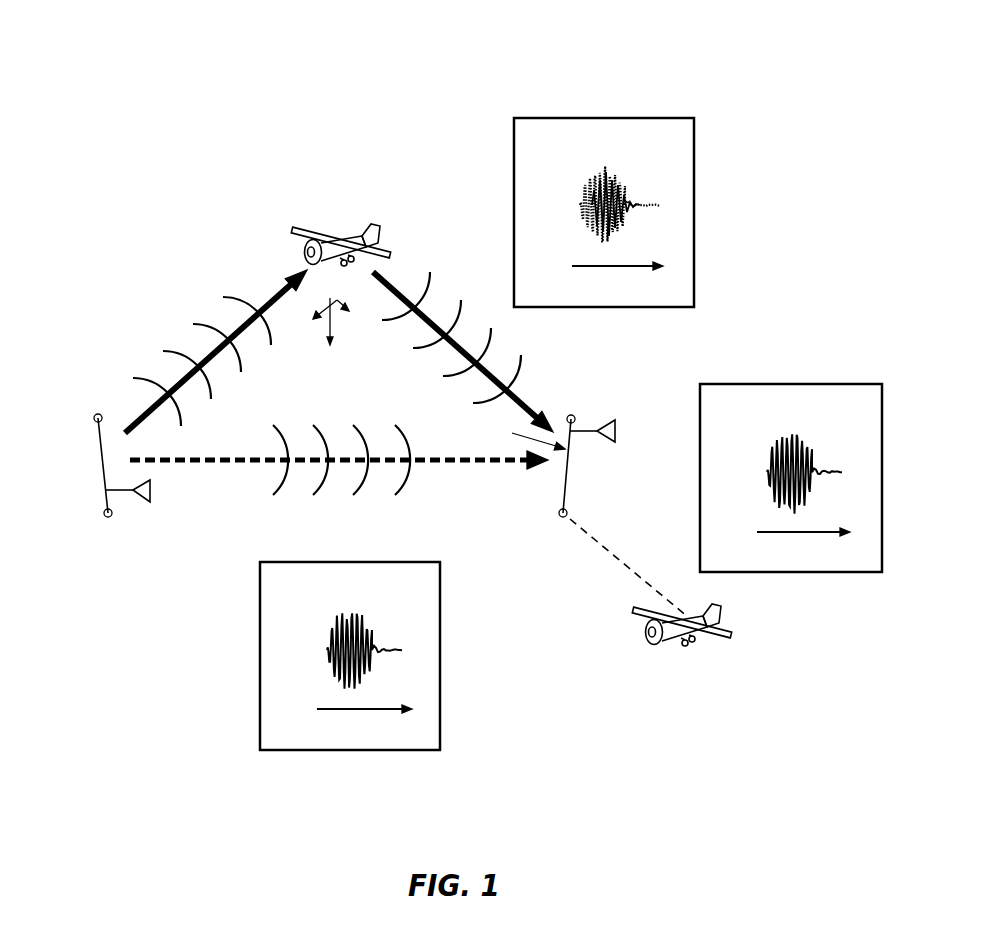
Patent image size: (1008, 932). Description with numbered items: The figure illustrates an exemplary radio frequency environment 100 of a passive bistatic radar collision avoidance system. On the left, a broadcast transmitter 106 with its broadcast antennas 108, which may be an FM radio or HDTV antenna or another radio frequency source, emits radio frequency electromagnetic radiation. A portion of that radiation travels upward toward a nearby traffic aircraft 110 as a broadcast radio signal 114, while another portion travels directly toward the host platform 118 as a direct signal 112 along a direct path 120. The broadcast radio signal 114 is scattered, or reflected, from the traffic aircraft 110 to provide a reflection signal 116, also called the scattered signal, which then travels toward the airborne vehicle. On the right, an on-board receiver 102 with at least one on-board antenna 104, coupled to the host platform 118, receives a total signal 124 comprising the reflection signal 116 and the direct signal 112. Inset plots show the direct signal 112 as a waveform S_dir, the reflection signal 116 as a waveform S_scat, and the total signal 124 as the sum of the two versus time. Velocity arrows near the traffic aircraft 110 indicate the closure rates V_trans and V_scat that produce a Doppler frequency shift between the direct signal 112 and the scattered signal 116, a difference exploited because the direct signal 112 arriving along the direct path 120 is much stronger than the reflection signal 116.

The radio frequency environment 100 is at (718, 38).
The on-board receiver 102 is at (567, 493).
The on-board antenna 104 is at (607, 422).
The broadcast transmitter 106 is at (100, 455).
The broadcast antennas 108 is at (140, 502).
The traffic aircraft 110 is at (338, 235).
The direct signal 112 is at (278, 477).
The broadcast radio signal 114 is at (177, 412).
The reflection signal 116 is at (466, 368).
The host platform 118 is at (670, 643).
The direct path 120 is at (533, 467).
The total signal 124 is at (550, 457).